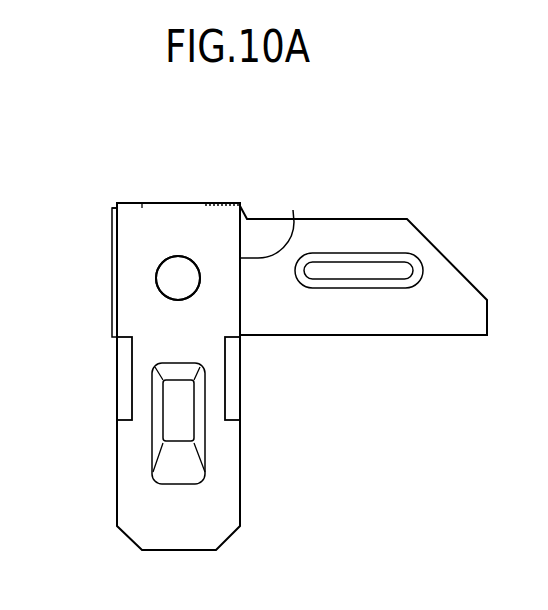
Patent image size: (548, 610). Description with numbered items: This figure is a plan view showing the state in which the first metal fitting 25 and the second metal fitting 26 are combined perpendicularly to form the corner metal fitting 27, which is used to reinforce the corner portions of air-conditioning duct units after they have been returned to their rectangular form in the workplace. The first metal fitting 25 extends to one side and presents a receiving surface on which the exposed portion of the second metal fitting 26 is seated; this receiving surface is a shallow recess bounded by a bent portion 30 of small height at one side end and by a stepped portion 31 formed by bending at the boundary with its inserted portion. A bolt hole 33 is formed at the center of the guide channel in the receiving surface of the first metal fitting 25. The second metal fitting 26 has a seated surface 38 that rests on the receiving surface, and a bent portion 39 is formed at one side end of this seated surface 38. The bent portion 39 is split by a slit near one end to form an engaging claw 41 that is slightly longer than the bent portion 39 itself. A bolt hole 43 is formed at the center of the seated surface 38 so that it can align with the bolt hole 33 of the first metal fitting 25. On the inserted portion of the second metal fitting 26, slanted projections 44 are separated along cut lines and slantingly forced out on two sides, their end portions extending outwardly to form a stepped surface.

The first metal fitting 25 is at (358, 232).
The second metal fitting 26 is at (230, 498).
The corner metal fitting 27 is at (324, 212).
The bent portion 30 is at (112, 277).
The stepped portion 31 is at (273, 221).
The bolt hole 33 is at (176, 262).
The seated surface 38 is at (155, 218).
The bent portion 39 is at (205, 201).
The engaging claw 41 is at (130, 209).
The bolt hole 43 is at (165, 280).
The slanted projections 44 is at (127, 366).